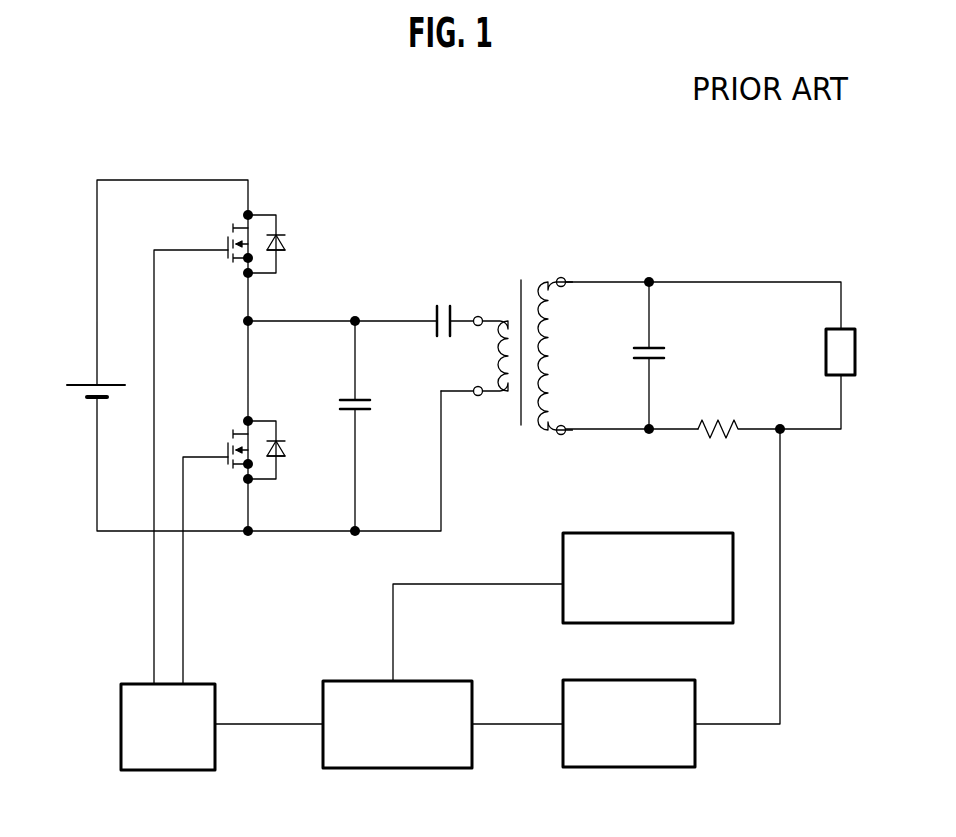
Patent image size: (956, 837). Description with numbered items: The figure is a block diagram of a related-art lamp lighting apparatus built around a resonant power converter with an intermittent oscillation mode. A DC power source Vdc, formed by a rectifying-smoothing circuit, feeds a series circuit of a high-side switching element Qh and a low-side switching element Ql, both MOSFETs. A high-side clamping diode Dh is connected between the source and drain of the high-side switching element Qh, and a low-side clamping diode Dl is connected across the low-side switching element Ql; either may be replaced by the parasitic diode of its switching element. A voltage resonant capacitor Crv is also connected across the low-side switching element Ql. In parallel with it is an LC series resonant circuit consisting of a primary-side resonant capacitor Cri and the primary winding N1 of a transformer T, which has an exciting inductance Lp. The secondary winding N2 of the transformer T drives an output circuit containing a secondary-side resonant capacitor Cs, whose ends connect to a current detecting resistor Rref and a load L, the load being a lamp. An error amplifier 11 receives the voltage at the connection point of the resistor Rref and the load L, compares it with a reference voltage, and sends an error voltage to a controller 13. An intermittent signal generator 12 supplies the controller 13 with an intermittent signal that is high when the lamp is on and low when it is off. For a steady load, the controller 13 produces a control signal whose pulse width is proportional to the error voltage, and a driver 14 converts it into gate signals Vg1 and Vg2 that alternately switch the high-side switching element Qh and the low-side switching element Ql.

The error amplifier 11 is at (563, 693).
The intermittent signal generator 12 is at (565, 548).
The controller 13 is at (323, 701).
The driver 14 is at (121, 700).
The DC power source Vdc is at (85, 405).
The high-side switching element Qh is at (229, 250).
The low-side switching element Ql is at (231, 456).
The high-side clamping diode Dh is at (283, 246).
The low-side clamping diode Dl is at (281, 452).
The gate signal Vg1 is at (191, 458).
The gate signal Vg2 is at (200, 562).
The voltage resonant capacitor Crv is at (333, 406).
The resonant capacitor Cri is at (452, 307).
The transformer T is at (523, 277).
The primary winding N1 is at (477, 343).
The exciting inductance Lp is at (484, 356).
The secondary winding N2 is at (553, 347).
The resonant capacitor Cs is at (666, 355).
The load L is at (840, 352).
The current detecting resistor Rref is at (738, 443).